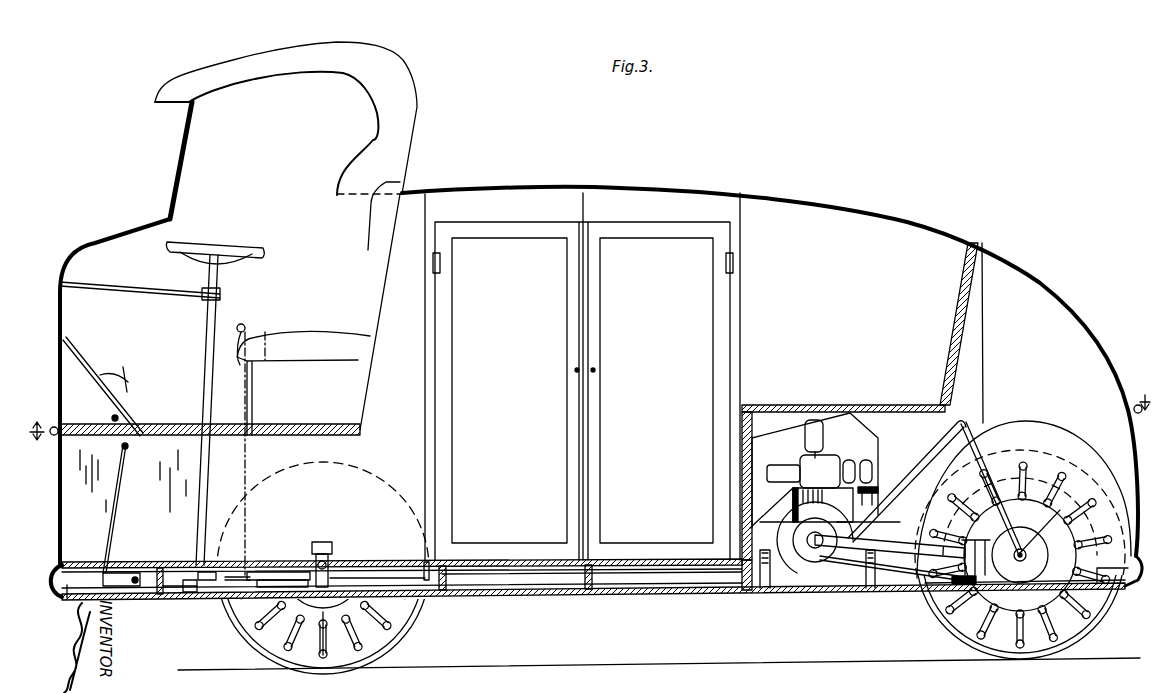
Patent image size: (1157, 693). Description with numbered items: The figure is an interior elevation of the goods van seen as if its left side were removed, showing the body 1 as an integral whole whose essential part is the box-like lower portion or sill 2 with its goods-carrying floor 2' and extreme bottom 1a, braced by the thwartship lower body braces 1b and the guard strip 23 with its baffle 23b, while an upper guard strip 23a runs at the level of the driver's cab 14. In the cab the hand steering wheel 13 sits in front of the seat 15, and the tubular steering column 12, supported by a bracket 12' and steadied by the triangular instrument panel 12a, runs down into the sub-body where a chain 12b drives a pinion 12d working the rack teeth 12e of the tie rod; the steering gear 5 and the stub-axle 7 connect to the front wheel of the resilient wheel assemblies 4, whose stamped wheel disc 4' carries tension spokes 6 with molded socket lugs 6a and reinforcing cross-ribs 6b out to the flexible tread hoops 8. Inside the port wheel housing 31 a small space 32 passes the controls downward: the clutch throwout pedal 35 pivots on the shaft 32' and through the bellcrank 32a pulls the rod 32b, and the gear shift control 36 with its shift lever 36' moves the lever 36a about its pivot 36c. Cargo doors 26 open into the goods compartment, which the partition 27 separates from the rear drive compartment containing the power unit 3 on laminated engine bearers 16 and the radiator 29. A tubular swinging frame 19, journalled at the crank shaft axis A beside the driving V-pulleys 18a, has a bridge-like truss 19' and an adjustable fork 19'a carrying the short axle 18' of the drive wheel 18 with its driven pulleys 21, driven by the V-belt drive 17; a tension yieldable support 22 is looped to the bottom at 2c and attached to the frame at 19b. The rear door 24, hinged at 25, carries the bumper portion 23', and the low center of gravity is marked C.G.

The body 1 is at (828, 206).
The extreme bottom of the van 1a is at (190, 600).
The lower body braces 1b is at (161, 570).
The box-like lower portion or sill 2 is at (593, 597).
The floor 2' is at (406, 492).
The loops 2c is at (961, 592).
The power unit 3 is at (826, 420).
The resilient wheel assemblies 4 is at (585, 409).
The stamped wheel disc 4' is at (654, 627).
The steering gear 5 is at (191, 593).
The tension spokes 6 is at (262, 636).
The molded socket lugs 6a is at (366, 596).
The externally molded reinforcements 6b is at (322, 640).
The stub-axle 7 is at (328, 564).
The flexible tread hoops 8 is at (390, 630).
The steering column 12 is at (191, 410).
The bracket 12' is at (212, 606).
The triangular instrument panel 12a is at (155, 290).
The chain 12b is at (257, 572).
The pinion 12d is at (316, 548).
The rack teeth 12e is at (285, 578).
The hand steering wheel 13 is at (240, 247).
The driver's cab 14 is at (400, 80).
The seat 15 is at (317, 336).
The engine bearers 16 is at (765, 590).
The V-belt drive 17 is at (1013, 516).
The drive wheel 18 is at (1024, 499).
The short axle 18' is at (1039, 528).
The driving V-pulleys 18a is at (814, 552).
The tubular swinging frame 19 is at (890, 529).
The bridge-like truss 19' is at (935, 487).
The adjustable fork 19'a is at (1020, 555).
The swinging frame attachment 19b is at (954, 550).
The driven pulleys 21 is at (1034, 556).
The tension yieldable support 22 is at (889, 565).
The guard strip 23 is at (38, 581).
The bumper strip portion 23' is at (1121, 582).
The upper guard strip 23a is at (52, 428).
The baffle 23b is at (85, 596).
The rear door 24 is at (1118, 372).
The hinge 25 is at (984, 290).
The doors 26 is at (496, 250).
The partition 27 is at (946, 380).
The radiator 29 is at (770, 420).
The port wheel housing 31 is at (74, 458).
The small space 32 is at (127, 508).
The shaft 32' is at (103, 386).
The bellcrank 32a is at (130, 572).
The rod 32b is at (516, 588).
The clutch throwout pedal 35 is at (128, 372).
The gear shift lever 36 is at (253, 327).
The shift lever 36' is at (264, 453).
The lever 36a is at (566, 576).
The pivot 36c is at (425, 561).
The motor crank shaft axis A is at (810, 538).
The center of gravity C.G. is at (460, 590).